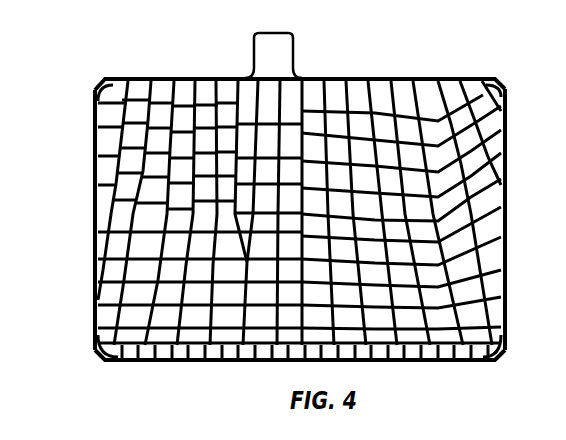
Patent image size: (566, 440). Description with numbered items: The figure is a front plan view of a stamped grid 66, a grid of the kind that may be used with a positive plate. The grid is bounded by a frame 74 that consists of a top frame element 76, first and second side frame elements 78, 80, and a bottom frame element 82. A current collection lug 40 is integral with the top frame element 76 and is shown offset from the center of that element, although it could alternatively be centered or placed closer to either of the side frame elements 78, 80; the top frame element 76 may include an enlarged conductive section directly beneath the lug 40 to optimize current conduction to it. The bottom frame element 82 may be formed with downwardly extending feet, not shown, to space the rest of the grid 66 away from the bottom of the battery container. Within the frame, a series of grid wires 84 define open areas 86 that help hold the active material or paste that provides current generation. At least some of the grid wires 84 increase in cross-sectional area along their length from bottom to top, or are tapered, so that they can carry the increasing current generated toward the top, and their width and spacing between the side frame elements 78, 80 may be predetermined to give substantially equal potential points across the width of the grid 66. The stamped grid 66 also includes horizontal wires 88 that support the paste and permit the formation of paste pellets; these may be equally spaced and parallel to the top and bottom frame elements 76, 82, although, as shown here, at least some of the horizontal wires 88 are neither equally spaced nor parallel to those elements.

The current collection lug 40 is at (253, 55).
The stamped grid 66 is at (458, 62).
The frame 74 is at (79, 107).
The top frame element 76 is at (350, 83).
The first side frame element 78 is at (92, 245).
The second side frame element 80 is at (506, 290).
The bottom frame element 82 is at (389, 363).
The grid wires 84 is at (213, 265).
The open areas 86 is at (288, 271).
The horizontal wires 88 is at (434, 317).